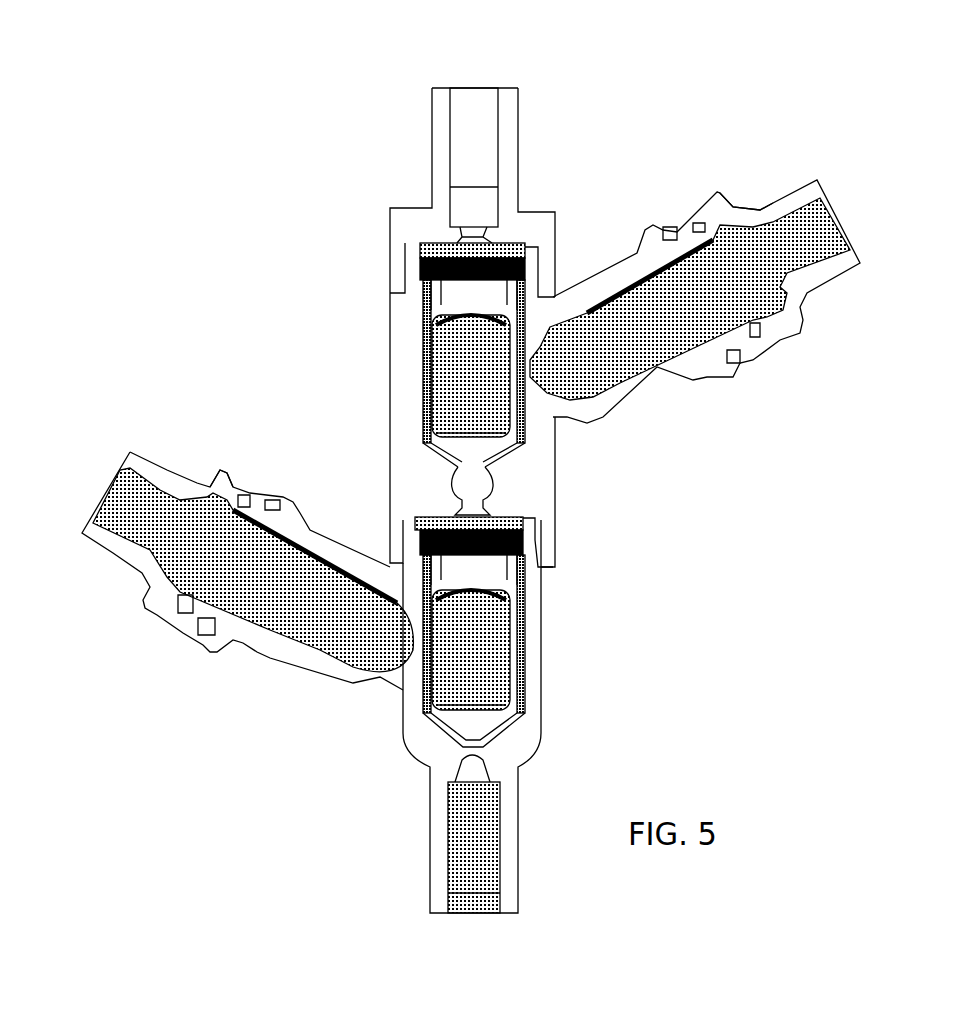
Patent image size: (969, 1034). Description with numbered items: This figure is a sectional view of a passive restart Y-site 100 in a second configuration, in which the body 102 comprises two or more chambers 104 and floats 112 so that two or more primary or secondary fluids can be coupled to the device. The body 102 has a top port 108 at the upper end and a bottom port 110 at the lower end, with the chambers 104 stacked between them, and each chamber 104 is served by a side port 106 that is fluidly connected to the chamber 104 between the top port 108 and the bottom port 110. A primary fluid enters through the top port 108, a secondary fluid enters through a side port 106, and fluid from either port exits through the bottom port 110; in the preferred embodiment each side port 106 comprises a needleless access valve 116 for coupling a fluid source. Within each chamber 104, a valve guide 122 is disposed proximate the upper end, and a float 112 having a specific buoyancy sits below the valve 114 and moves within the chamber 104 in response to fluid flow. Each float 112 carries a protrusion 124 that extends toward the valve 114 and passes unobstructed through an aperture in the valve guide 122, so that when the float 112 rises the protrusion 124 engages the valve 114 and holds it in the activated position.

The passive restart Y-site 100 is at (685, 64).
The body 102 is at (388, 307).
The chamber 104 is at (425, 310).
The side port 106 is at (857, 200).
The top port 108 is at (468, 64).
The bottom port 110 is at (478, 935).
The float 112 is at (425, 388).
The valve 114 is at (433, 240).
The needleless access valve 116 is at (690, 205).
The valve guide 122 is at (422, 250).
The protrusion 124 is at (417, 283).